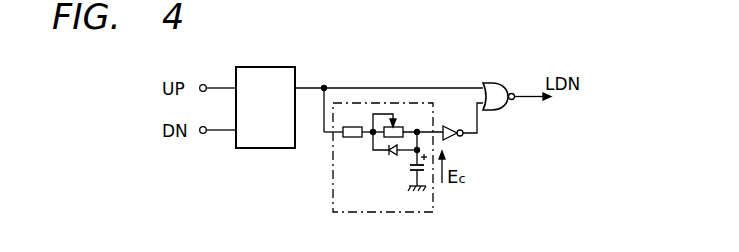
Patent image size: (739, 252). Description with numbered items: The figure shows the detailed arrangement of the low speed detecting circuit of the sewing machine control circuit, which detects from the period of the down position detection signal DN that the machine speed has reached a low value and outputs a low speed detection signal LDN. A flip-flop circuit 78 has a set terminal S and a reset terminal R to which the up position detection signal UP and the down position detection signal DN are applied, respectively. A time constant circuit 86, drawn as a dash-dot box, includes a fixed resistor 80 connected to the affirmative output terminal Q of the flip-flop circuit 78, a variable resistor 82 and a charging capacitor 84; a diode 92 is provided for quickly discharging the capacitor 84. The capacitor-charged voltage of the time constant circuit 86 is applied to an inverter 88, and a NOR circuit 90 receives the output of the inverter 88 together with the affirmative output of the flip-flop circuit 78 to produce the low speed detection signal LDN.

The flip-flop circuit 78 is at (276, 66).
The fixed resistor 80 is at (351, 127).
The variable resistor 82 is at (398, 118).
The charging capacitor 84 is at (410, 168).
The time constant circuit 86 is at (333, 186).
The inverter 88 is at (463, 136).
The NOR circuit 90 is at (494, 83).
The diode 92 is at (393, 156).